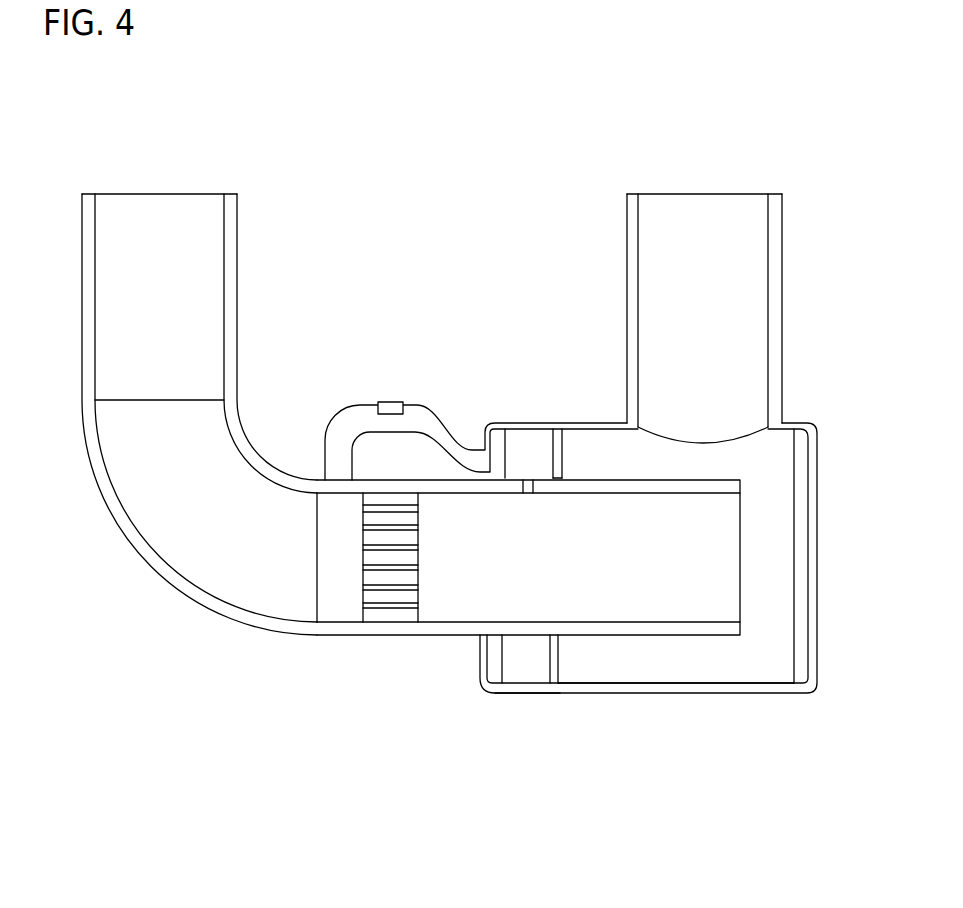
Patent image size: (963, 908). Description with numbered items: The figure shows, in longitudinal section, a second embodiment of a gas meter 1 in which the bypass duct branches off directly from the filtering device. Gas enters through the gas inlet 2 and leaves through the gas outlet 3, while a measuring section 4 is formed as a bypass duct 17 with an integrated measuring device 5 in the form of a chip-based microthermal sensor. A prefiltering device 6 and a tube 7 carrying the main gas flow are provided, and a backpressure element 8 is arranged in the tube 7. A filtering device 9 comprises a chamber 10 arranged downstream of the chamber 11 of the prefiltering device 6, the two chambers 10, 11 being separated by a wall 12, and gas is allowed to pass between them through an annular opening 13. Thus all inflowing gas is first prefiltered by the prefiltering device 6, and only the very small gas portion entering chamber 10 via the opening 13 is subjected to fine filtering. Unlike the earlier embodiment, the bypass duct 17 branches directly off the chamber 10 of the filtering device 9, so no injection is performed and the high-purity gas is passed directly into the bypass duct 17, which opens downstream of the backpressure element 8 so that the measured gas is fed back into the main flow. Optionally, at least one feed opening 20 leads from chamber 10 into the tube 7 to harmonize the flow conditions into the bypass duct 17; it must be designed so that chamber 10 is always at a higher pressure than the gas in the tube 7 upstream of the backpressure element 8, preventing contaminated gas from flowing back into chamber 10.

The gas meter 1 is at (484, 122).
The gas inlet 2 is at (683, 170).
The gas outlet 3 is at (185, 155).
The measuring section 4 is at (433, 390).
The measuring device 5 is at (392, 401).
The prefiltering device 6 is at (785, 563).
The tube 7 is at (627, 625).
The backpressure element 8 is at (380, 605).
The filtering device 9 is at (522, 710).
The chamber 10 is at (506, 669).
The chamber 11 is at (727, 672).
The wall 12 is at (558, 440).
The annular opening 13 is at (568, 473).
The bypass duct 17 is at (447, 437).
The feed opening 20 is at (537, 492).